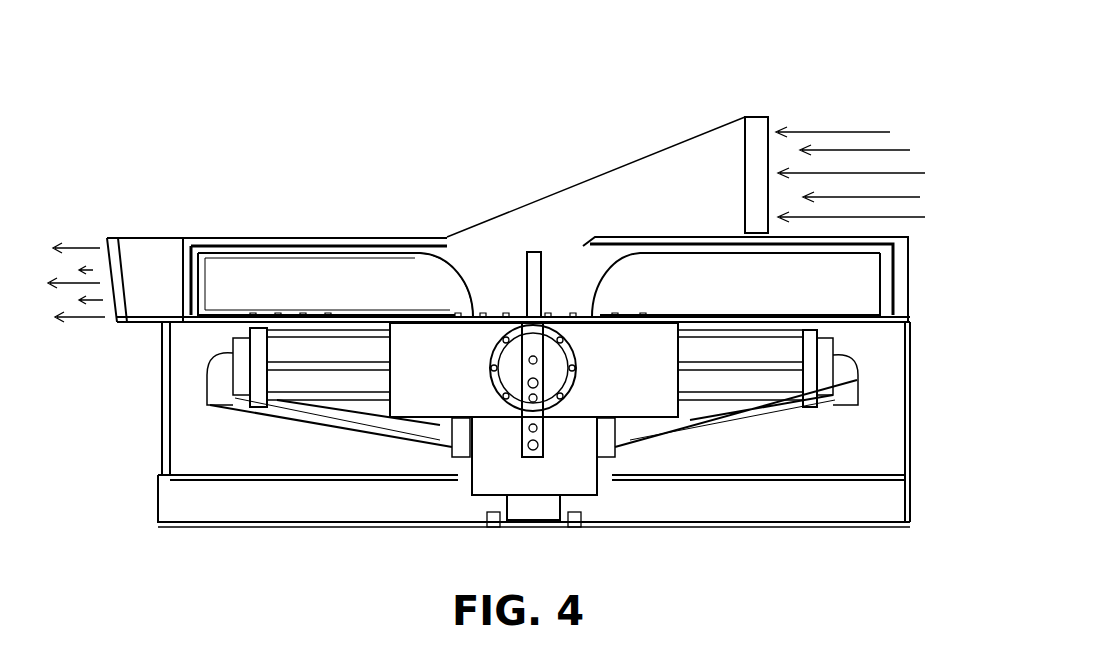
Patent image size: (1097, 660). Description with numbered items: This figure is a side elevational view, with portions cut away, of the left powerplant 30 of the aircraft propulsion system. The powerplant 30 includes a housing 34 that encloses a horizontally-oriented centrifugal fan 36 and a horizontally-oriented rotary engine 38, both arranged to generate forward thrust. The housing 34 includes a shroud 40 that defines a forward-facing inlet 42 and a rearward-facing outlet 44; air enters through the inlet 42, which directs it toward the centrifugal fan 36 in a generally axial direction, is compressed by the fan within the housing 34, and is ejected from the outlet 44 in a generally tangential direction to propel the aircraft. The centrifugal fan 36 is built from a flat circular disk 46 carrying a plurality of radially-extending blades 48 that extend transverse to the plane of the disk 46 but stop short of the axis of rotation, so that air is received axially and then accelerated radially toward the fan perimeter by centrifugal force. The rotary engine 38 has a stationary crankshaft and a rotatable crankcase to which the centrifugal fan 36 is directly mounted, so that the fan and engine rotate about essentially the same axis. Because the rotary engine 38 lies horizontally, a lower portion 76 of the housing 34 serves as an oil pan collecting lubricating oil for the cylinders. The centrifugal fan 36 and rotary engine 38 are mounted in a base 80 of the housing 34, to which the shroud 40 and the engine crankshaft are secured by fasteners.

The powerplant 30 is at (828, 108).
The housing 34 is at (765, 527).
The centrifugal fan 36 is at (355, 267).
The rotary engine 38 is at (765, 418).
The shroud 40 is at (236, 238).
The forward-facing inlet 42 is at (707, 137).
The rearward-facing outlet 44 is at (137, 237).
The flat circular disk 46 is at (580, 317).
The radially-extending blades 48 is at (415, 267).
The lower portion of housing 76 is at (293, 503).
The base 80 is at (862, 527).